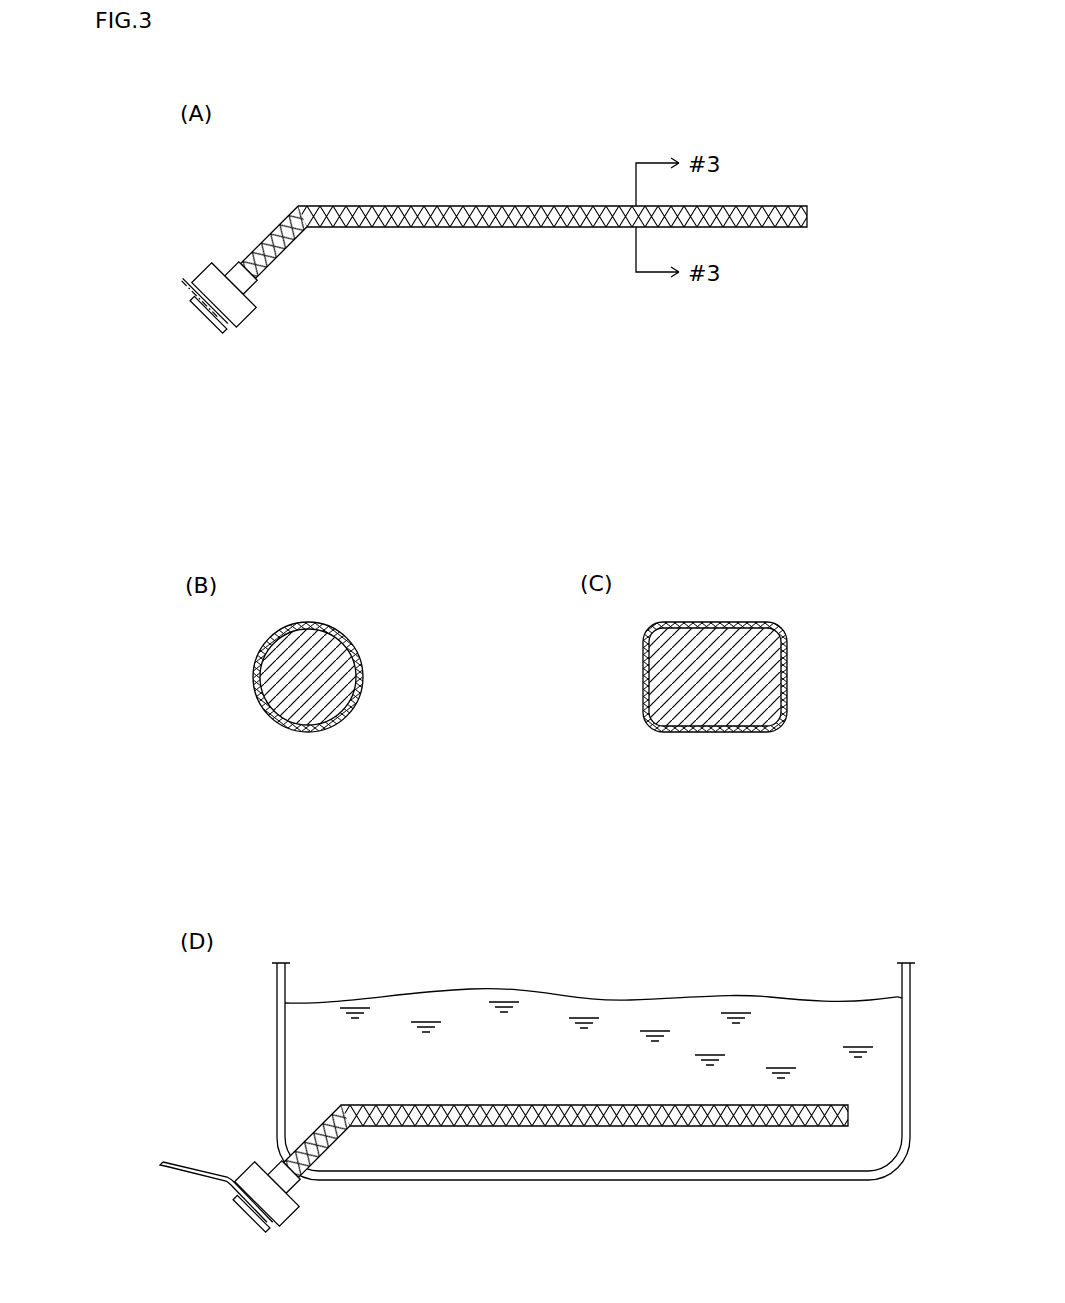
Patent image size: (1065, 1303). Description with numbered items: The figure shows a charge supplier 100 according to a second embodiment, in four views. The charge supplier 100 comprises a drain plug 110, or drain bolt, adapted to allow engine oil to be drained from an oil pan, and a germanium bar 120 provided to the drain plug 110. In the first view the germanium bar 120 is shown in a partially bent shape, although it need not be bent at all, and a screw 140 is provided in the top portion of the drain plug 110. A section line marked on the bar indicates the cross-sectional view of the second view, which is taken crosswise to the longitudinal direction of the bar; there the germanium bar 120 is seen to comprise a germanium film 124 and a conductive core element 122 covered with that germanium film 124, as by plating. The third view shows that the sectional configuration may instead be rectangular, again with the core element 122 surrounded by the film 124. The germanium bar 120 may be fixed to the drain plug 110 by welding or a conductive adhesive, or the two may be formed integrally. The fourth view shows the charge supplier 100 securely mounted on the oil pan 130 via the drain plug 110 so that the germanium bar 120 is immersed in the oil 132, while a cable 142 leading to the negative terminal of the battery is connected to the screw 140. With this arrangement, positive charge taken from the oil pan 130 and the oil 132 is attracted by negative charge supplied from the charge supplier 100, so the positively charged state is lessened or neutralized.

The charge supplier 100 is at (446, 692).
The drain plug 110 is at (201, 272).
The germanium bar 120 is at (551, 666).
The conductive core element 122 is at (345, 695).
The germanium film 124 is at (361, 667).
The oil pan 130 is at (700, 1181).
The oil 132 is at (625, 1000).
The screw 140 is at (207, 318).
The cable 142 is at (177, 1170).